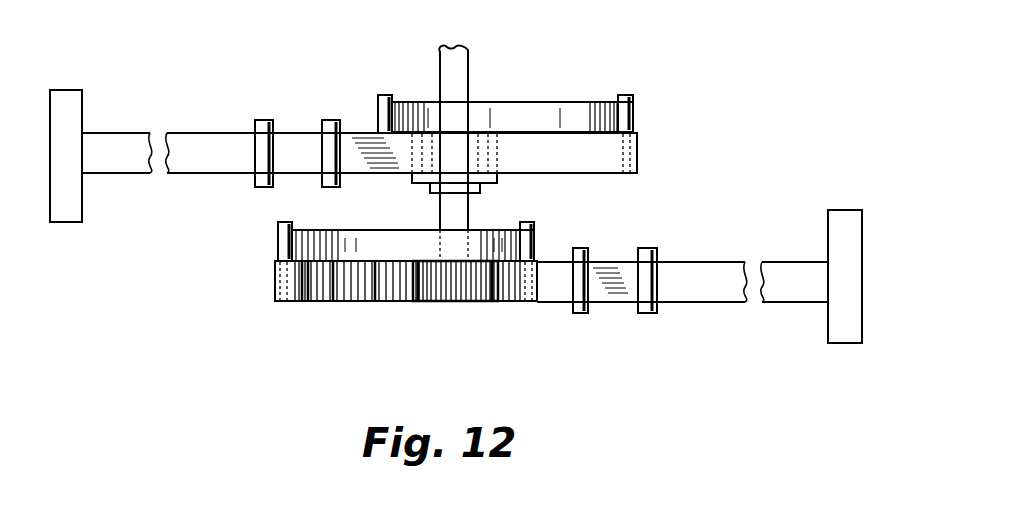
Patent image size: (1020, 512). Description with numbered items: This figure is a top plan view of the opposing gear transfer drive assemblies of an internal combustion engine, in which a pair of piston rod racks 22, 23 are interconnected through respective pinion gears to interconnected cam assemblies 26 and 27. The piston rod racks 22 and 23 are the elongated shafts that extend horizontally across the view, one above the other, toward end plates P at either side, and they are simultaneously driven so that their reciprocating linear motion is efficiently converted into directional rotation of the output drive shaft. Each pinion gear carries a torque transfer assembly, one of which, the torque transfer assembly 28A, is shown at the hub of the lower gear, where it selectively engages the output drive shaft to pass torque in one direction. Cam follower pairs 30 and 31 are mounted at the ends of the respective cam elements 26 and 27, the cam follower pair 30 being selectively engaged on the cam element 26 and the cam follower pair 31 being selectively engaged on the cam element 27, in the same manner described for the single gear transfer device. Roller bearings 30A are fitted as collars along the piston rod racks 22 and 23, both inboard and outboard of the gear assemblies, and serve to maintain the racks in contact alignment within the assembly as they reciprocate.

The piston rod rack 22 is at (556, 288).
The piston rod rack 23 is at (598, 160).
The cam assembly 26 is at (353, 303).
The cam assembly 27 is at (498, 75).
The torque transfer assembly 28A is at (453, 293).
The cam follower pair 30 is at (382, 112).
The roller bearing 30A is at (262, 150).
The cam follower pair 31 is at (633, 112).
The plate P is at (845, 242).